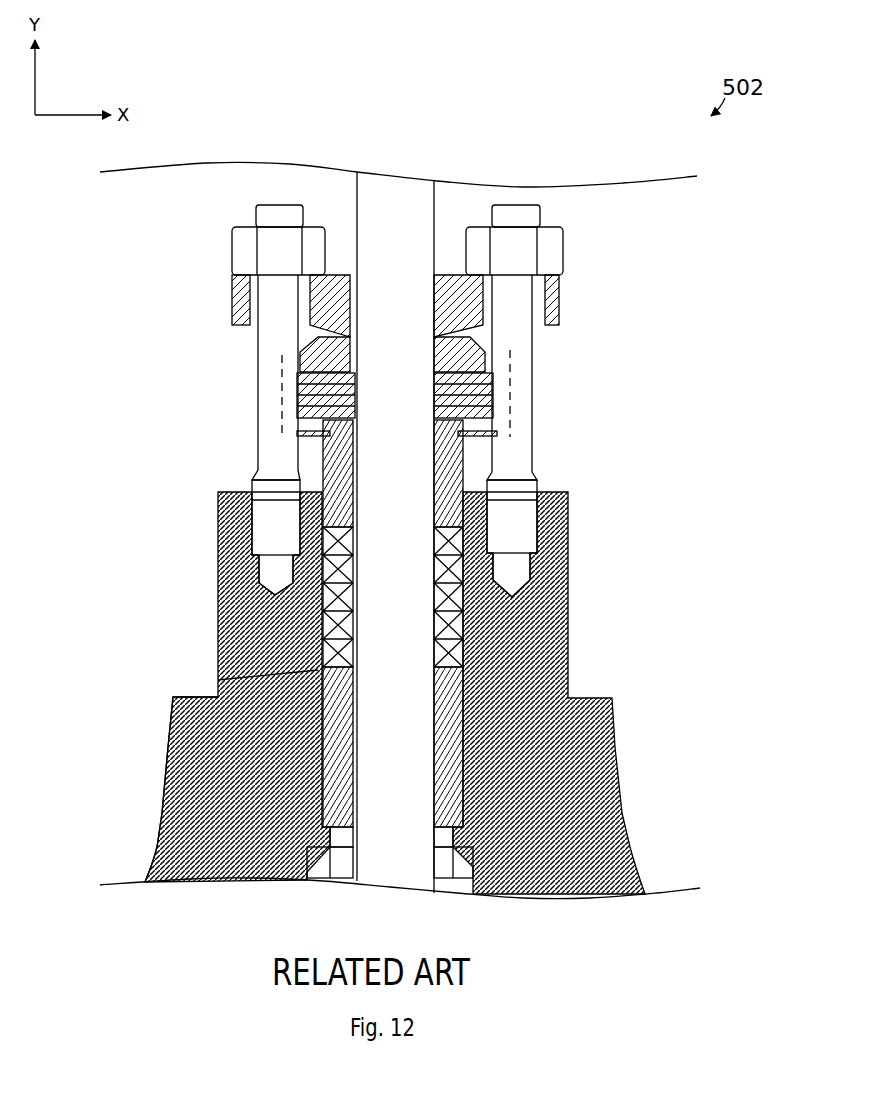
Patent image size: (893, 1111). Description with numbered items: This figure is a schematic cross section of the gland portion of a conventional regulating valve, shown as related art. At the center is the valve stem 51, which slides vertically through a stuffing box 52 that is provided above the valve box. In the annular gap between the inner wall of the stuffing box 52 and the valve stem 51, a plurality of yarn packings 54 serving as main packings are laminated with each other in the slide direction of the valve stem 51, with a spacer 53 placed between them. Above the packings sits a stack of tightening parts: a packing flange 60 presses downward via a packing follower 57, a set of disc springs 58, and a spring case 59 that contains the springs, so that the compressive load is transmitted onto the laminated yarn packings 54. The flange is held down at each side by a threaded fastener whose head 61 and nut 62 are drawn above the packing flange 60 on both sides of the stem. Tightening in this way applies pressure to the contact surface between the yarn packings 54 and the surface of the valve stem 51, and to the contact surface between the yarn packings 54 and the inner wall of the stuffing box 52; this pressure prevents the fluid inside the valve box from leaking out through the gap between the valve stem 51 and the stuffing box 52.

The valve stem 51 is at (417, 753).
The stuffing box 52 is at (168, 740).
The spacer 53 is at (218, 680).
The yarn packings 54 is at (325, 622).
The packing follower 57 is at (297, 463).
The disc springs 58 is at (297, 405).
The spring case 59 is at (507, 355).
The packing flange 60 is at (240, 302).
The bolt head 61 is at (255, 216).
The nut 62 is at (240, 255).